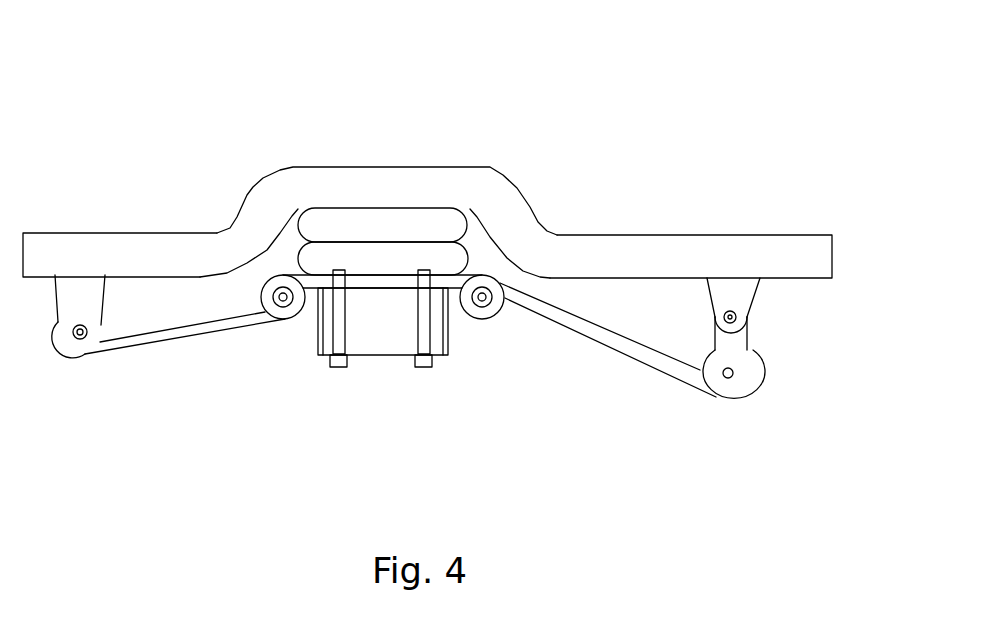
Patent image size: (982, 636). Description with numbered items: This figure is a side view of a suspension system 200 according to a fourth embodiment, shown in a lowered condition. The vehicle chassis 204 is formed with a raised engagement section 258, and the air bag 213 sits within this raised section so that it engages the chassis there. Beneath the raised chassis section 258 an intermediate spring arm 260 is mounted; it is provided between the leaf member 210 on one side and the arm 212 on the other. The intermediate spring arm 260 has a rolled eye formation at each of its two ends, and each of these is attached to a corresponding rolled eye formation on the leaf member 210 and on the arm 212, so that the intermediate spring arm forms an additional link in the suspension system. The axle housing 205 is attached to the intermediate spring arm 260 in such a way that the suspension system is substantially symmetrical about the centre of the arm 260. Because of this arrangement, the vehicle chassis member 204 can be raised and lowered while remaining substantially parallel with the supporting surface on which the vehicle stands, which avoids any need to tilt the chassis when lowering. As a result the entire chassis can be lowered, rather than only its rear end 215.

The suspension system 200 is at (209, 99).
The vehicle chassis 204 is at (605, 250).
The raised engagement section 258 is at (430, 182).
The air bag 213 is at (352, 223).
The intermediate spring arm 260 is at (317, 284).
The axle housing 205 is at (402, 333).
The leaf member 210 is at (137, 342).
The arm 212 is at (643, 355).
The rear end 215 is at (835, 247).